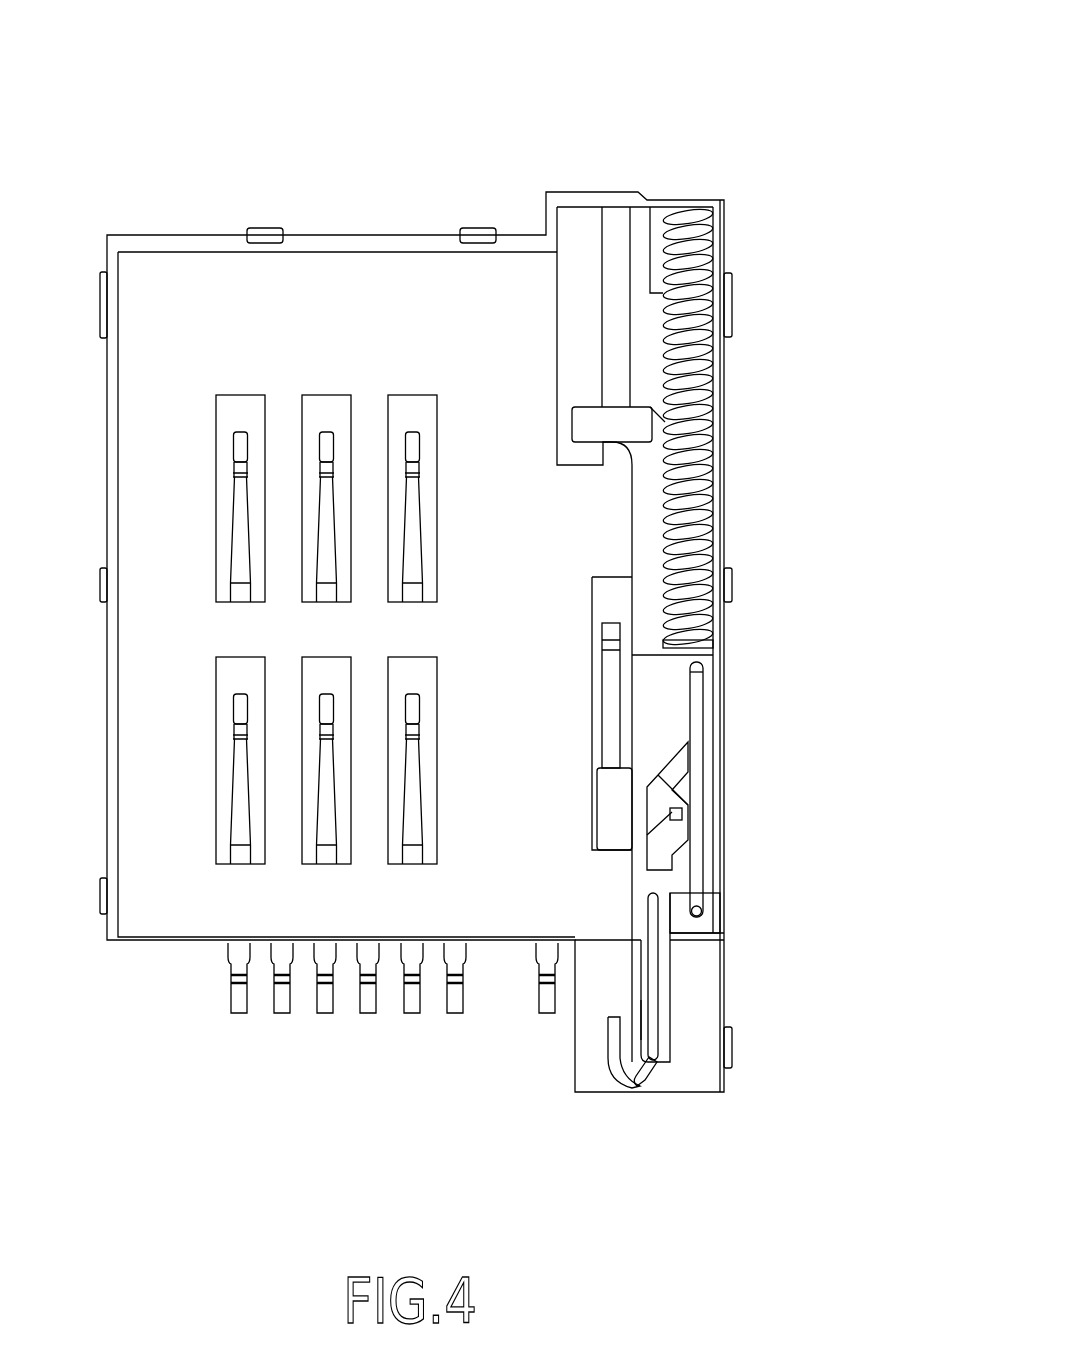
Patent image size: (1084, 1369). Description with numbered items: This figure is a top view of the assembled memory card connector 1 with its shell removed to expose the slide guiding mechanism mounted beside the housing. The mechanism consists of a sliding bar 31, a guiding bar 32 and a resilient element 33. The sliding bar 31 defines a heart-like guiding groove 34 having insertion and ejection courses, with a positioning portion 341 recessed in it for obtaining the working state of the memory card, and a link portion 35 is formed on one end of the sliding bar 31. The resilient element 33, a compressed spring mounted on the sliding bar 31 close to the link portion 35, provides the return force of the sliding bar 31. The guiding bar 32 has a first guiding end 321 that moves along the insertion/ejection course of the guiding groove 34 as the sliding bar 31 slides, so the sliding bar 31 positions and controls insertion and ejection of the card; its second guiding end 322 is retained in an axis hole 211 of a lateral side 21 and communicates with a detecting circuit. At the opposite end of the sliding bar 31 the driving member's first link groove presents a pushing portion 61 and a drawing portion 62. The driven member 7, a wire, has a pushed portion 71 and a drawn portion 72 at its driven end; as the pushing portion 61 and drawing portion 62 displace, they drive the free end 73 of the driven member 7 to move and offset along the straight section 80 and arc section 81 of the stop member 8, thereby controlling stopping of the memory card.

The memory card connector 1 is at (790, 14).
The lateral side 21 is at (726, 857).
The axis hole 211 is at (700, 913).
The sliding bar 31 is at (636, 791).
The guiding bar 32 is at (703, 772).
The first guiding end 321 is at (703, 664).
The second guiding end 322 is at (706, 928).
The resilient element 33 is at (713, 278).
The guiding groove 34 is at (657, 770).
The positioning portion 341 is at (682, 812).
The link portion 35 is at (585, 405).
The pushing portion 61 is at (650, 900).
The drawing portion 62 is at (640, 1012).
The driven member 7 is at (656, 1002).
The pushed portion 71 is at (650, 905).
The drawn portion 72 is at (650, 908).
The free end 73 is at (658, 1072).
The stop member 8 is at (548, 1208).
The straight section 80 is at (610, 1025).
The arc section 81 is at (626, 1080).